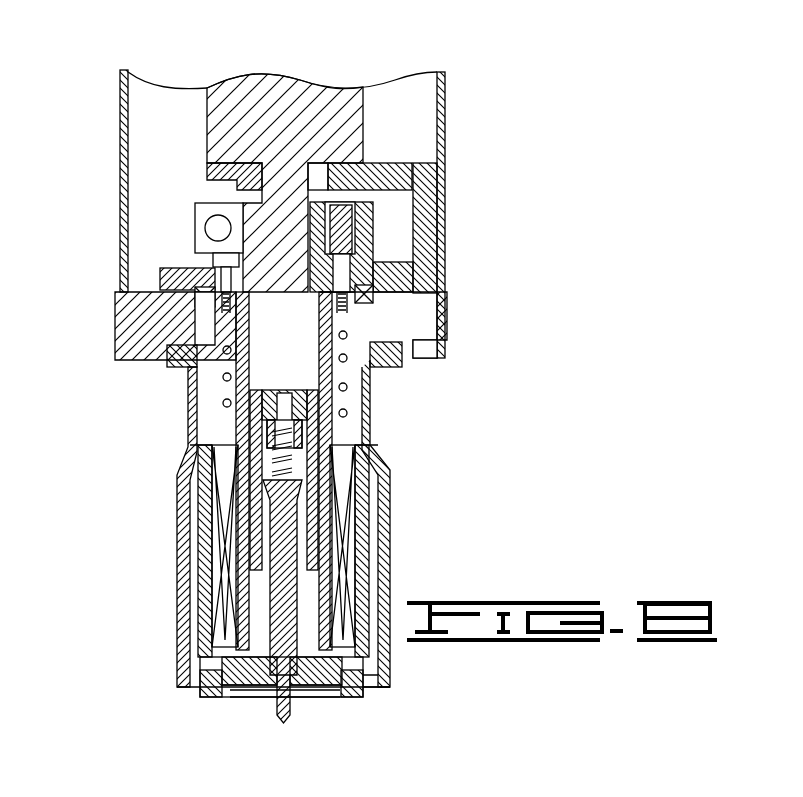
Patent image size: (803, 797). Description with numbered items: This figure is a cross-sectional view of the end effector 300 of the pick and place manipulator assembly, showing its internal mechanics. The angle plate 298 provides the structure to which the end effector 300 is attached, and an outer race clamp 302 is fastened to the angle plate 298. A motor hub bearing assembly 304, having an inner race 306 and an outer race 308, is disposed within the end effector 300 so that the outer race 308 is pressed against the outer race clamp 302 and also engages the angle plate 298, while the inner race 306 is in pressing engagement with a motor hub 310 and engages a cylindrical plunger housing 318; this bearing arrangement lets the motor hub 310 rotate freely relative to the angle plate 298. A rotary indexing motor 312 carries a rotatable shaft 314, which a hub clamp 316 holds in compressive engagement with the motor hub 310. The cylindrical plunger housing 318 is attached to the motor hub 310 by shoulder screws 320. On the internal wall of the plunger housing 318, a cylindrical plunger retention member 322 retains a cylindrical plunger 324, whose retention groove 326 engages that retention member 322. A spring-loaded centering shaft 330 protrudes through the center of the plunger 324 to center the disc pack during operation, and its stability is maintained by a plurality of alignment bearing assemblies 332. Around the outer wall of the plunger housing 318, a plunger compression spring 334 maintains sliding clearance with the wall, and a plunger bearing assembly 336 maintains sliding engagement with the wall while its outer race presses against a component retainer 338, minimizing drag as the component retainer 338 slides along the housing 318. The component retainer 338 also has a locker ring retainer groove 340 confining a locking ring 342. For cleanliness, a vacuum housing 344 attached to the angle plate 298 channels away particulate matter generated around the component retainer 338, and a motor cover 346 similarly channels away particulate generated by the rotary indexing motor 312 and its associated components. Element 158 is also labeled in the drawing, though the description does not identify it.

The end effector 300 is at (360, 73).
The rotary indexing motor 312 is at (238, 78).
The motor cover 346 is at (445, 97).
The rotatable shaft 314 is at (392, 193).
The hub clamp 316 is at (195, 203).
The motor hub 310 is at (205, 262).
The outer race clamp 302 is at (160, 285).
The shoulder screws 320 is at (350, 262).
The outer race 308 is at (373, 288).
The motor hub bearing assembly 304 is at (374, 294).
The angle plate 298 is at (115, 333).
The cylindrical plunger housing 318 is at (183, 366).
The plunger compression spring 334 is at (348, 392).
The locker ring retainer groove 340 is at (368, 415).
The inner race 306 is at (247, 373).
The locking ring 342 is at (213, 440).
The component retainer 338 is at (354, 588).
The plunger bearing assembly 336 is at (213, 512).
The cylindrical plunger retention member 322 is at (252, 566).
The spring-loaded centering shaft 330 is at (288, 517).
The retention groove 326 is at (310, 553).
The cylindrical plunger 324 is at (322, 684).
The alignment bearing assembly 332 is at (227, 689).
The vacuum housing 344 is at (382, 681).
The nozzle 158 is at (238, 704).